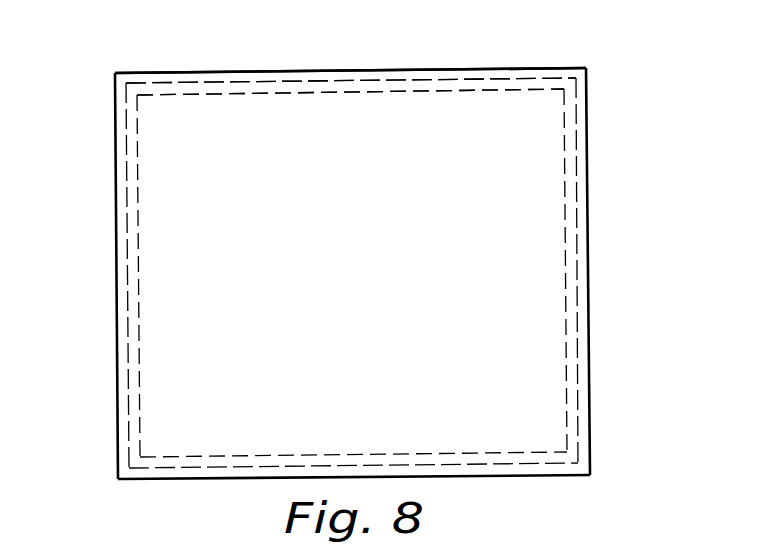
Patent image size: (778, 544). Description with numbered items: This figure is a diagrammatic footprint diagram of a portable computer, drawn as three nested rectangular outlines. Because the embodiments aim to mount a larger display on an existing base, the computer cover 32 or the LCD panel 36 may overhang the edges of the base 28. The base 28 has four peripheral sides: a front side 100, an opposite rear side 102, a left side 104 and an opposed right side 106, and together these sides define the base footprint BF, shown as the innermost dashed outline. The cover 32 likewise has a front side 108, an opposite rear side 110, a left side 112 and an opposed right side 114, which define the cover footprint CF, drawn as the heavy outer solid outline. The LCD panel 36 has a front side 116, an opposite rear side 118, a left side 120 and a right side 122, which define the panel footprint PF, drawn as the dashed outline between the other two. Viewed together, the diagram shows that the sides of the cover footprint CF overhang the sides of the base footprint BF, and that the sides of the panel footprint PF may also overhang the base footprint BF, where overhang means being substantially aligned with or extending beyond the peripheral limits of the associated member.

The front side 100 is at (515, 452).
The rear side 102 is at (207, 93).
The left side 104 is at (137, 228).
The right side 106 is at (565, 197).
The front side 108 is at (156, 480).
The rear side 110 is at (155, 72).
The left side 112 is at (118, 347).
The right side 114 is at (589, 313).
The front side 116 is at (240, 467).
The rear side 118 is at (527, 78).
The left side 120 is at (129, 423).
The right side 122 is at (579, 374).
The base 28 is at (370, 92).
The computer cover 32 is at (447, 67).
The LCD panel 36 is at (279, 82).
The cover footprint CF is at (114, 89).
The base footprint BF is at (137, 183).
The panel footprint PF is at (128, 317).